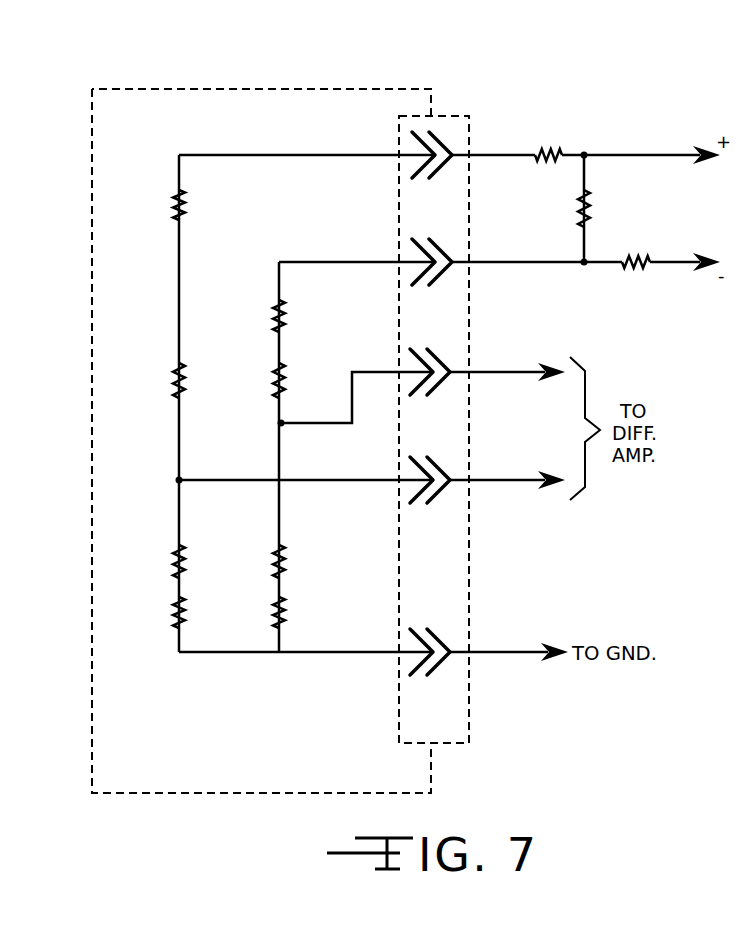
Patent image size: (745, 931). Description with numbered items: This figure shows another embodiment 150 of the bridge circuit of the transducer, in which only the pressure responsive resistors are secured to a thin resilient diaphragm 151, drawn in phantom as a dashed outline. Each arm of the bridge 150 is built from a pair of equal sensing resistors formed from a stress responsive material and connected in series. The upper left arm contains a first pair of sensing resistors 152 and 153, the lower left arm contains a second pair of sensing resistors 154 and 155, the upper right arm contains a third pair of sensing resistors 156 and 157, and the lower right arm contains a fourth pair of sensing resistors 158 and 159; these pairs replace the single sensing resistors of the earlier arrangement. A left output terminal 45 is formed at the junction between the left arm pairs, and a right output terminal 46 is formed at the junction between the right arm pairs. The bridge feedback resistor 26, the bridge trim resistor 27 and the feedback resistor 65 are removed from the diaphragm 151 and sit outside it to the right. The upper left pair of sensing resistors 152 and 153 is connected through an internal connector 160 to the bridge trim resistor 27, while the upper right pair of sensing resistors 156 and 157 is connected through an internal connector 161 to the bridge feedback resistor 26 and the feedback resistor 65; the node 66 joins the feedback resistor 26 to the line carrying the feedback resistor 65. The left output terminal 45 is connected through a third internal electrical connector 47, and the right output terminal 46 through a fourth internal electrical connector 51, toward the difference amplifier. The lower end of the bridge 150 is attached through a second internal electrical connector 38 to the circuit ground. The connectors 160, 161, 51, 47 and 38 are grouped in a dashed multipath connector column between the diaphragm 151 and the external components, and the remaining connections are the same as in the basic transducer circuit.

The bridge circuit embodiment 150 is at (585, 58).
The diaphragm 151 is at (303, 89).
The sensing resistor 152 is at (183, 222).
The sensing resistor 153 is at (192, 369).
The sensing resistor 154 is at (185, 550).
The sensing resistor 155 is at (187, 616).
The sensing resistor 156 is at (284, 317).
The sensing resistor 157 is at (285, 375).
The sensing resistor 158 is at (285, 550).
The sensing resistor 159 is at (287, 616).
The internal connector 160 is at (437, 172).
The internal connector 161 is at (440, 250).
The fourth internal electrical connector 51 is at (441, 354).
The third internal electrical connector 47 is at (441, 462).
The second internal electrical connector 38 is at (445, 635).
The right output terminal 46 is at (282, 422).
The left output terminal 45 is at (181, 478).
The bridge trim resistor 27 is at (552, 146).
The bridge feedback resistor 26 is at (597, 207).
The node 66 is at (583, 266).
The feedback resistor 65 is at (648, 268).